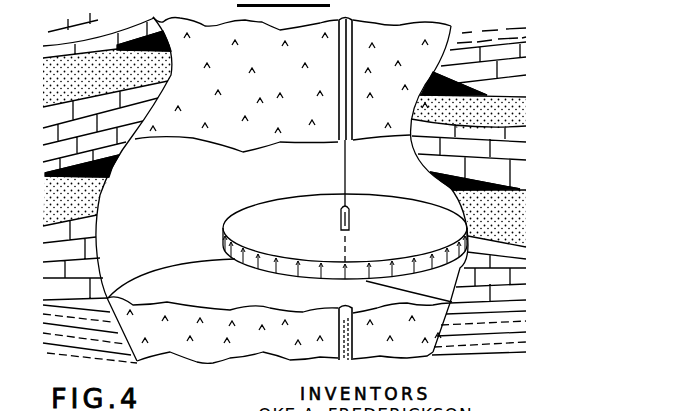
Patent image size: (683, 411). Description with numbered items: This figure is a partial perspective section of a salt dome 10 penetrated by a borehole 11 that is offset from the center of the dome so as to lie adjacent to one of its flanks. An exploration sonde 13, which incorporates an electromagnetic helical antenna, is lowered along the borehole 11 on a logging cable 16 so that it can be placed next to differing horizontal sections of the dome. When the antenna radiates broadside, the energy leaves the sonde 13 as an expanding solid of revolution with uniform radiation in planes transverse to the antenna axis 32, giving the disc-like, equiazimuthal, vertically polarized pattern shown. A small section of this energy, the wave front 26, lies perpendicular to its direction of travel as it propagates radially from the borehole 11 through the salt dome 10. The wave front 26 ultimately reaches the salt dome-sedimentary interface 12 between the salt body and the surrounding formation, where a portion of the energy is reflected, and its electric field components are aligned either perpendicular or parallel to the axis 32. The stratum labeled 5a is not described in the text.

The salt dome 10 is at (254, 99).
The borehole 11 is at (340, 68).
The salt dome-sedimentary interface 12 is at (452, 30).
The exploration sonde 13 is at (349, 223).
The logging cable 16 is at (343, 176).
The wave front 26 is at (250, 266).
The antenna axis 32 is at (342, 254).
The rock stratum 5a is at (8, 243).